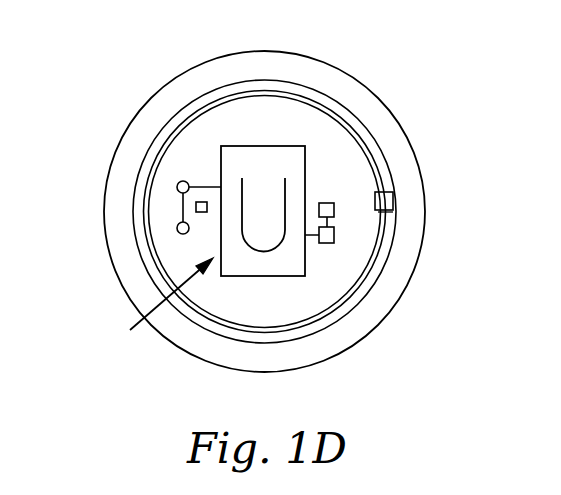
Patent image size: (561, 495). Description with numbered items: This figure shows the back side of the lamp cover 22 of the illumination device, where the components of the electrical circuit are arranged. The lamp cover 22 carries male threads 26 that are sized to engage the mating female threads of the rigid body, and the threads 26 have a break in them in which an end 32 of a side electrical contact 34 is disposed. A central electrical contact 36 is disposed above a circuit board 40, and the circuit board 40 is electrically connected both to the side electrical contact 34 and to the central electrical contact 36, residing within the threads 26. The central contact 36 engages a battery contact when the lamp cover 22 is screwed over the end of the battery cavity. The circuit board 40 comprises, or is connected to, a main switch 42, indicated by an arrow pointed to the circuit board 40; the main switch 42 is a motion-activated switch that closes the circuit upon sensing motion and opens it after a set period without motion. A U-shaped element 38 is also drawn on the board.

The lamp cover 22 is at (373, 90).
The male threads 26 is at (379, 146).
The end of side electrical contact 32 is at (394, 203).
The side electrical contact 34 is at (386, 192).
The central electrical contact 36 is at (237, 146).
The U-shaped sensor element 38 is at (270, 253).
The circuit board 40 is at (147, 207).
The main switch 42 is at (131, 329).